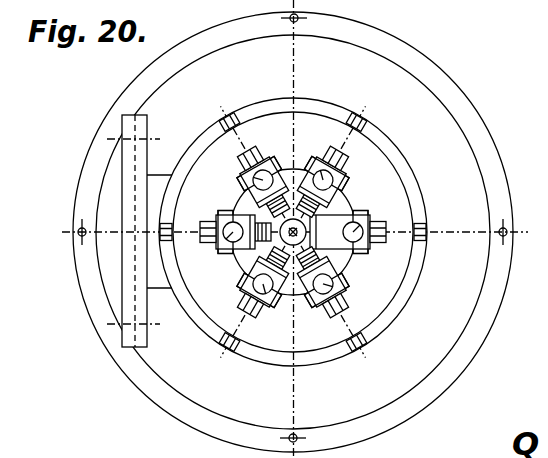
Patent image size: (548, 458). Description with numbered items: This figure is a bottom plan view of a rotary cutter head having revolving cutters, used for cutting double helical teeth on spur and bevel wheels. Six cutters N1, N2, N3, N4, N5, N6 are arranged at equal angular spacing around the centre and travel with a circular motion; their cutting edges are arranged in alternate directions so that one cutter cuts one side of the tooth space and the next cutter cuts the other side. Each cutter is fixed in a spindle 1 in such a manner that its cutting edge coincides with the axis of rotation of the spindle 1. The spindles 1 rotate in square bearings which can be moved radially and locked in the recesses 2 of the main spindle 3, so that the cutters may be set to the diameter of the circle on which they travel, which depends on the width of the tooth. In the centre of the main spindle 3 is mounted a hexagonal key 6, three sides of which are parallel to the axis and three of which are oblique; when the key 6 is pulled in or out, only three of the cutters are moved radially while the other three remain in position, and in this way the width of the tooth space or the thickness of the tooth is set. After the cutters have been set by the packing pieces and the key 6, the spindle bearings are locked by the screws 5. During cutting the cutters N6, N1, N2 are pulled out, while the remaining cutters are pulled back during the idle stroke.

The spindle 1 is at (342, 173).
The recess 2 is at (387, 219).
The main spindle 3 is at (306, 335).
The screw 5 is at (429, 231).
The hexagonal key 6 is at (291, 221).
The cutter N1 is at (381, 205).
The cutter N2 is at (345, 272).
The cutter N3 is at (243, 303).
The cutter N4 is at (230, 238).
The cutter N5 is at (258, 184).
The cutter N6 is at (356, 155).